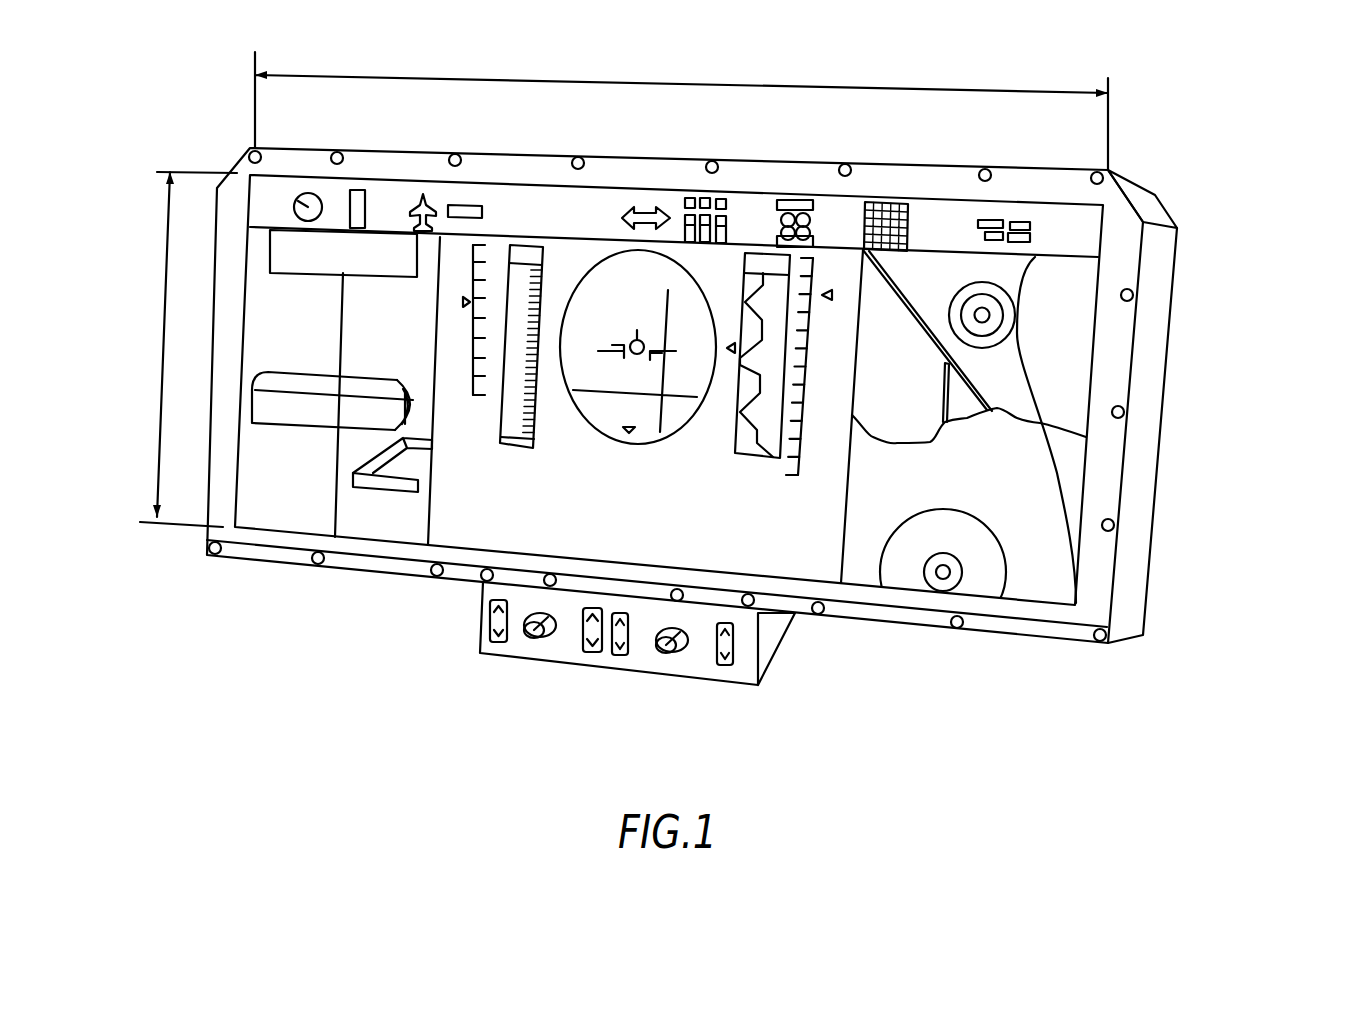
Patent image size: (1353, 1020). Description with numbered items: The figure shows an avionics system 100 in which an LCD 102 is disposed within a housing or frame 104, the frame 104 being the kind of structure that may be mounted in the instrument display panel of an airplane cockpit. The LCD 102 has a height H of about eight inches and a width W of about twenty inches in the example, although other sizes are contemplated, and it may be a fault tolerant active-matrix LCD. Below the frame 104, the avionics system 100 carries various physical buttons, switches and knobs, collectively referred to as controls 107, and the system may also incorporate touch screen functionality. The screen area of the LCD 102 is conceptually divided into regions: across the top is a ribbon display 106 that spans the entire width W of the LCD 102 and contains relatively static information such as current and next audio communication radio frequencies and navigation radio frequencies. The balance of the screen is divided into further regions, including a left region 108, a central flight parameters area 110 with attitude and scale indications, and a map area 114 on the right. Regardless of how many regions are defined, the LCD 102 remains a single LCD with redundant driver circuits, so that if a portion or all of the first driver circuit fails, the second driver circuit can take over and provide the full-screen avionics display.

The avionics system 100 is at (222, 152).
The LCD 102 is at (1002, 402).
The frame 104 is at (1150, 207).
The ribbon display 106 is at (477, 197).
The controls 107 is at (557, 668).
The left display region 108 is at (318, 341).
The flight parameters area 110 is at (690, 486).
The map area 114 is at (978, 494).
The width W is at (687, 82).
The height H is at (163, 322).